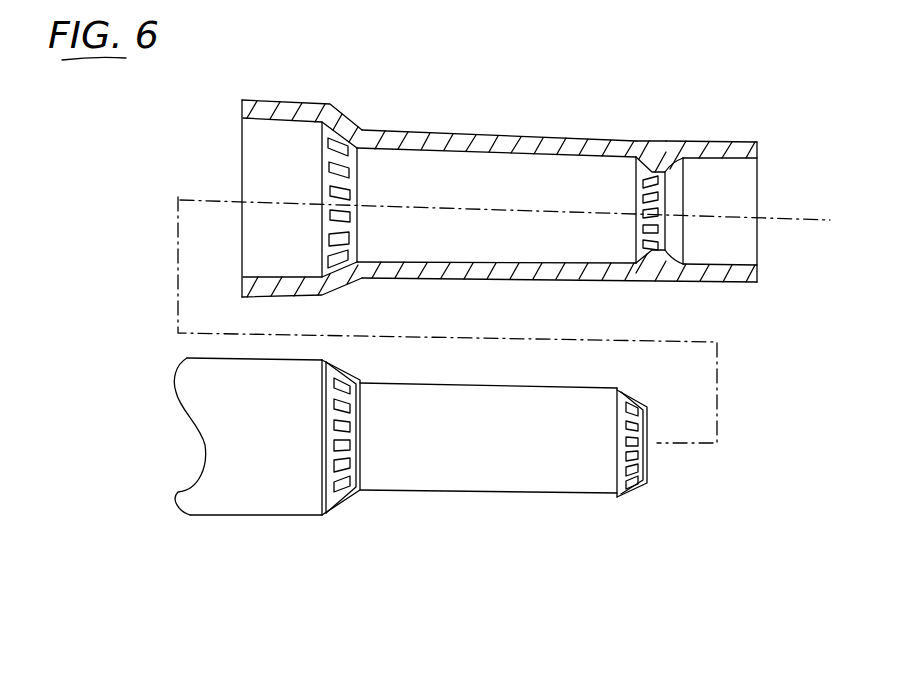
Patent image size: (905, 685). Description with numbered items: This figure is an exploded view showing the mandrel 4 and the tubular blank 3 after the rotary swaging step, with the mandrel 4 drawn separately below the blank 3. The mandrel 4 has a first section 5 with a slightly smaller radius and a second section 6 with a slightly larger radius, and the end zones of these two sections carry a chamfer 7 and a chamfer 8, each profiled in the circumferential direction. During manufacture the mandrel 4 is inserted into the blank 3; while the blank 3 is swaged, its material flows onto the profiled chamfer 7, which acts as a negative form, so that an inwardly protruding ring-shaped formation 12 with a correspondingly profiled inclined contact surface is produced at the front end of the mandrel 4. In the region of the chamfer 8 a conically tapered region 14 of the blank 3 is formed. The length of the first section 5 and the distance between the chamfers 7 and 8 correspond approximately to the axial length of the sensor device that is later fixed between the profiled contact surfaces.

The tubular blank 3 is at (509, 178).
The mandrel 4 is at (215, 428).
The first section 5 is at (516, 459).
The second section 6 is at (264, 486).
The chamfer 7 is at (635, 489).
The chamfer 8 is at (345, 499).
The inwardly protruding ring-shaped formation 12 is at (663, 145).
The conically tapered region 14 is at (351, 112).